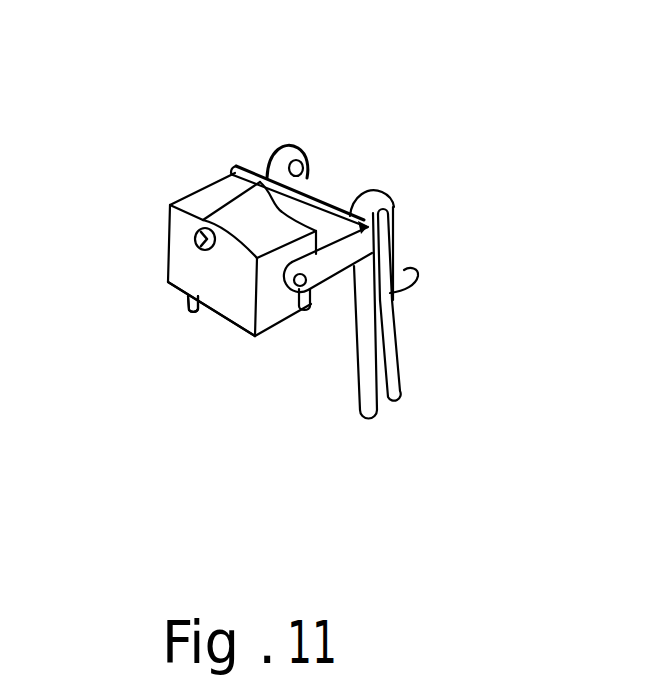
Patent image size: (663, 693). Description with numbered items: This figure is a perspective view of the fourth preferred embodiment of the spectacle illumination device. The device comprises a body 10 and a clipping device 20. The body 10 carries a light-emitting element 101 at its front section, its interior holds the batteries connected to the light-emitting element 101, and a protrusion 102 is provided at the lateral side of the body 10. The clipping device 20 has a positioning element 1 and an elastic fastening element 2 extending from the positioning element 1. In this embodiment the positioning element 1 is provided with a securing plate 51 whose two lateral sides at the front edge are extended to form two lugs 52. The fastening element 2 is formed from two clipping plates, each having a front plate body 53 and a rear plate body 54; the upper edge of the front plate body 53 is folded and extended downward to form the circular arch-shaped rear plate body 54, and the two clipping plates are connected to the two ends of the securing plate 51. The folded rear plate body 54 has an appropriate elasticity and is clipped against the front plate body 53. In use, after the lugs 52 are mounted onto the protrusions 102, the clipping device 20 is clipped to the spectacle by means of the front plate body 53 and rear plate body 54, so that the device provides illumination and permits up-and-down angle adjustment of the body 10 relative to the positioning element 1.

The positioning element 1 is at (187, 246).
The body 10 is at (213, 331).
The light-emitting element 101 is at (168, 256).
The protrusion 102 is at (299, 292).
The elastic fastening element 2 is at (328, 274).
The clipping device 20 is at (356, 170).
The securing plate 51 is at (312, 200).
The lug 52 is at (233, 170).
The front plate body 53 is at (358, 395).
The rear plate body 54 is at (405, 381).